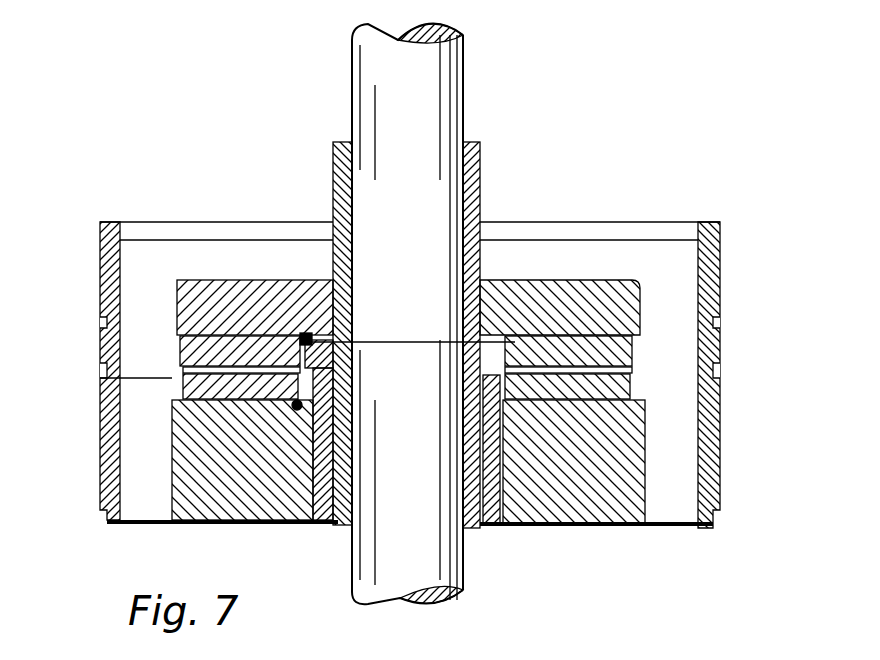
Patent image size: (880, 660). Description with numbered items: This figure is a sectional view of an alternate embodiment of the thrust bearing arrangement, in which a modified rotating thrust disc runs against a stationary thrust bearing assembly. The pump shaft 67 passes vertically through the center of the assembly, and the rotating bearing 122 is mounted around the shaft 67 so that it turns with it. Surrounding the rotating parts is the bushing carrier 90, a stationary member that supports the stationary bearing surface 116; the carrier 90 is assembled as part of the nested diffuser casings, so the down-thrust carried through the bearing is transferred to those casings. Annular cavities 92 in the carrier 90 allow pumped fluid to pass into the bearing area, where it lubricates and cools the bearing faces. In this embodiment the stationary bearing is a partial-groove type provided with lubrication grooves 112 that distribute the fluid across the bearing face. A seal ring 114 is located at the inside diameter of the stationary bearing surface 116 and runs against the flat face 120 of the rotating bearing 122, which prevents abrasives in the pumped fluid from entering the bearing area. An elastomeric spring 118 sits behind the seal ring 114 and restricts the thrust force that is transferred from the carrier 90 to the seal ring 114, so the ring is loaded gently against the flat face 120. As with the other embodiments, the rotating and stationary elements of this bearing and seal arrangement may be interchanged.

The shaft 67 is at (447, 88).
The bushing carrier 90 is at (720, 487).
The annular cavities 92 is at (672, 512).
The lubrication grooves 112 is at (607, 374).
The seal ring 114 is at (305, 337).
The stationary bearing surface 116 is at (603, 392).
The elastomeric spring 118 is at (298, 407).
The flat face 120 is at (638, 352).
The rotating bearing 122 is at (560, 282).